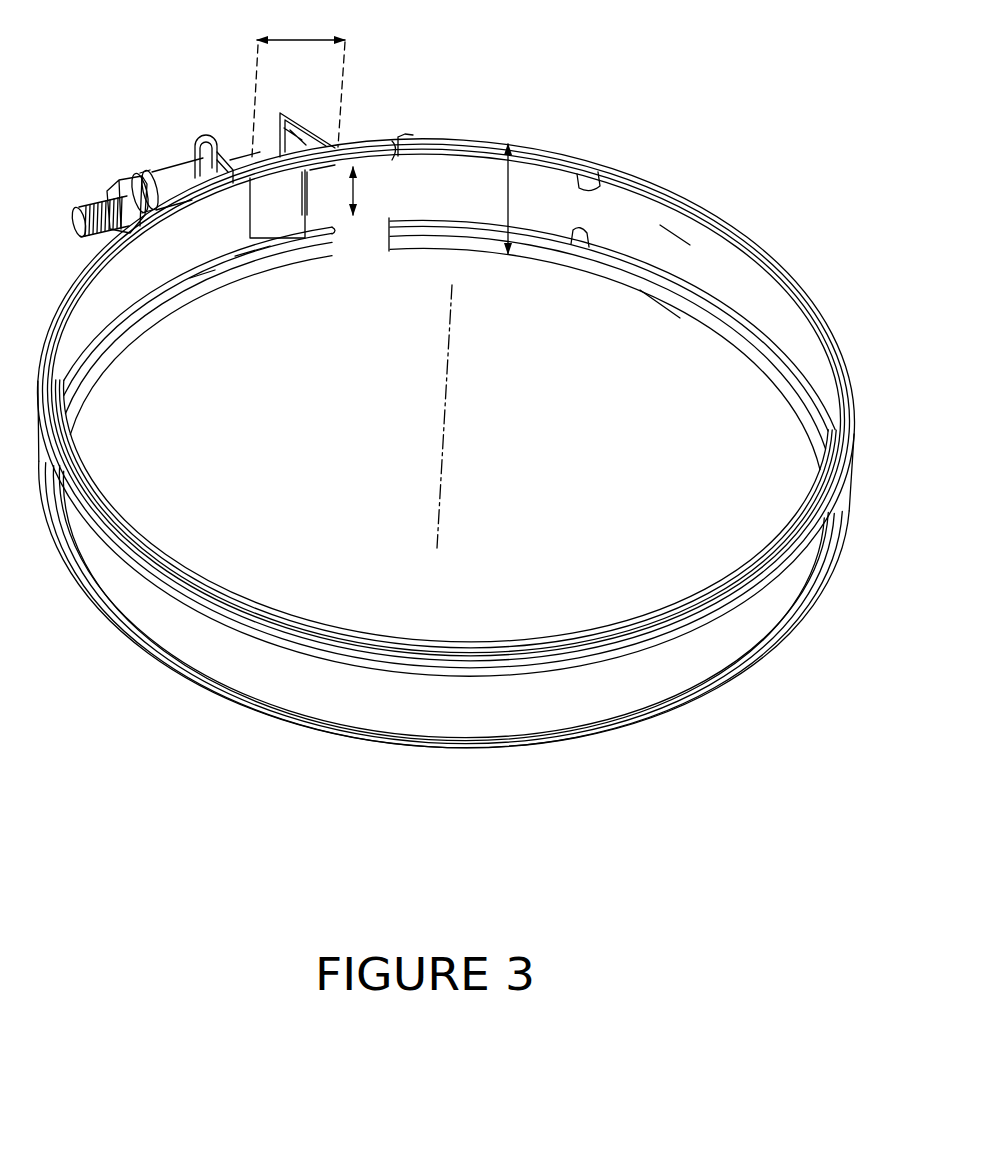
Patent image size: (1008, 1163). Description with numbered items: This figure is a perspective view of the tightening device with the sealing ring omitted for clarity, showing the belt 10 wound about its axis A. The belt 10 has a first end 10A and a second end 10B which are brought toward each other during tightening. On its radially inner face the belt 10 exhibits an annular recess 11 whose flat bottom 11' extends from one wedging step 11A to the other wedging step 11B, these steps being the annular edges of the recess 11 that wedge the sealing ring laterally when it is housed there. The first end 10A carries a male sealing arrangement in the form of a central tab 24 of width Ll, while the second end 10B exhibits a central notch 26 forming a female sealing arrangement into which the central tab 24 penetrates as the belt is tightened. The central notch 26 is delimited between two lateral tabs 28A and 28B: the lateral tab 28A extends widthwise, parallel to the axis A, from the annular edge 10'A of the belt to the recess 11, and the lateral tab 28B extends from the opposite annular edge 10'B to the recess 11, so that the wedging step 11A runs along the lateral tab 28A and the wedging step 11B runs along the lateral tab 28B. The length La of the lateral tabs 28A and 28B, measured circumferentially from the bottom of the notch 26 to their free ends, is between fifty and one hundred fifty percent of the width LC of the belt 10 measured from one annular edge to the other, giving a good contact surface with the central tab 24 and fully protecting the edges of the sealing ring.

The belt 10 is at (456, 431).
The first end of the belt 10A is at (418, 132).
The second end of the belt 10B is at (288, 278).
The annular edge of the belt 10'A is at (230, 128).
The opposite annular edge of the belt 10'B is at (211, 310).
The annular recess 11 is at (651, 335).
The flat bottom of the recess 11' is at (686, 195).
The wedging step 11A is at (593, 183).
The wedging step 11B is at (580, 240).
The central tab 24 is at (323, 177).
The central notch 26 is at (273, 213).
The lateral tab 28A is at (323, 147).
The lateral tab 28B is at (253, 263).
The length of the lateral tabs La is at (300, 40).
The width of the central tab Ll is at (357, 190).
The width of the belt LC is at (512, 200).
The axis of the belt A is at (450, 402).